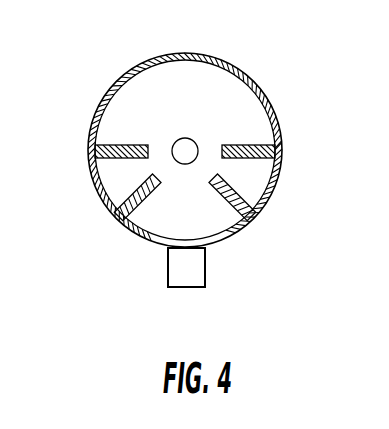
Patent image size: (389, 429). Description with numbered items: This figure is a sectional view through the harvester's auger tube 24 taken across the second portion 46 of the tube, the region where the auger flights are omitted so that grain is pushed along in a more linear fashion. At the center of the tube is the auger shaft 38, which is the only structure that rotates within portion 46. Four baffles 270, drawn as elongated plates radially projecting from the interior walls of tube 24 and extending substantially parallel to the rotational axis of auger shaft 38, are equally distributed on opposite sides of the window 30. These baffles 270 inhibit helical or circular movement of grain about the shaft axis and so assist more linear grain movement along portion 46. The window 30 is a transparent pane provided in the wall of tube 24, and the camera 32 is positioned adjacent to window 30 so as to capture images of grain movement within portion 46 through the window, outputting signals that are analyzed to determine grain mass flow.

The auger tube 24 is at (200, 162).
The second portion of auger tube 46 is at (224, 163).
The auger shaft 38 is at (194, 141).
The baffles 270 is at (112, 159).
The window 30 is at (216, 243).
The camera 32 is at (205, 268).